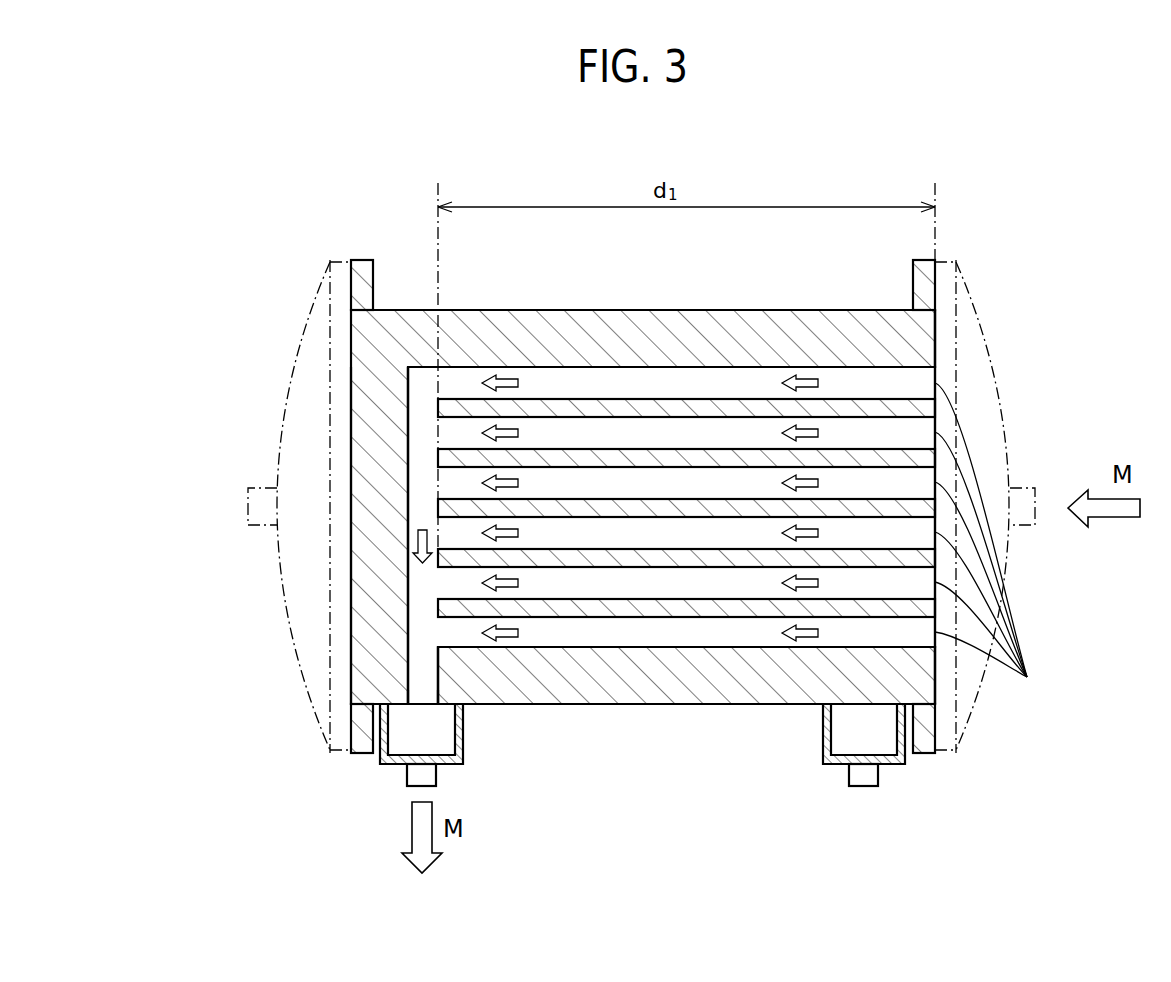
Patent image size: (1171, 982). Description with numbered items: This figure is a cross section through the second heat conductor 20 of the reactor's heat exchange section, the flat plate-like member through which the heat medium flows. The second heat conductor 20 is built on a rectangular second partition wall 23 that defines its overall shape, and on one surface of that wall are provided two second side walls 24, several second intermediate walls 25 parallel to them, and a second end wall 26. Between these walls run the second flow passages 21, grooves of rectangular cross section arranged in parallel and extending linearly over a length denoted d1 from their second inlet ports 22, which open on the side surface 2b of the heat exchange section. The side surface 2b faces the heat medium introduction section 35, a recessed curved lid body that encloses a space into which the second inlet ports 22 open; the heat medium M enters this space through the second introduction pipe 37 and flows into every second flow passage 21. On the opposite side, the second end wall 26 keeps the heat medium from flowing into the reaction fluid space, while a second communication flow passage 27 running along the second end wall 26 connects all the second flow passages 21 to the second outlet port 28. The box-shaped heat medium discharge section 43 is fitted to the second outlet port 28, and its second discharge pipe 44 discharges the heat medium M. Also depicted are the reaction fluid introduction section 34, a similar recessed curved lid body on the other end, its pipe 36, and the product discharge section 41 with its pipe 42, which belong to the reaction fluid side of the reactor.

The second heat conductor 20 is at (648, 307).
The second flow passage 21 is at (878, 647).
The second inlet port 22 is at (999, 539).
The second partition wall 23 is at (727, 382).
The second side wall 24 is at (535, 307).
The second intermediate wall 25 is at (612, 401).
The second end wall 26 is at (350, 440).
The second communication flow passage 27 is at (425, 497).
The second outlet port 28 is at (406, 676).
The side surface of the heat exchange section 2b is at (935, 675).
The reaction fluid introduction section 34 is at (308, 362).
The heat medium introduction section 35 is at (985, 362).
The pipe 36 is at (262, 489).
The second introduction pipe 37 is at (1022, 488).
The product discharge section 41 is at (823, 740).
The pipe 42 is at (849, 773).
The heat medium discharge section 43 is at (463, 742).
The second discharge pipe 44 is at (438, 777).